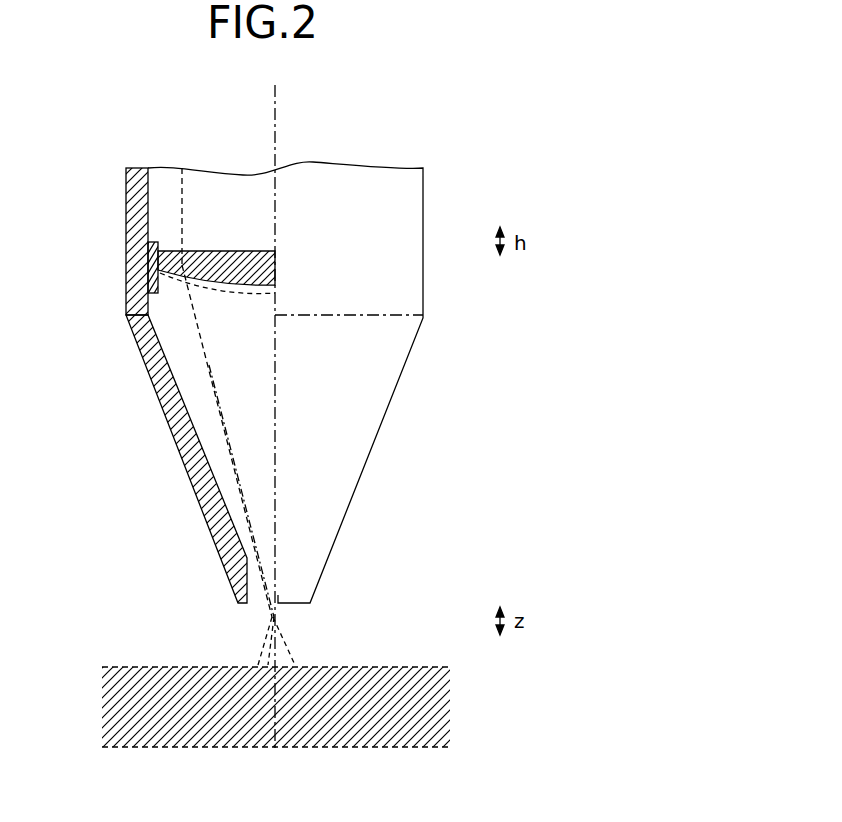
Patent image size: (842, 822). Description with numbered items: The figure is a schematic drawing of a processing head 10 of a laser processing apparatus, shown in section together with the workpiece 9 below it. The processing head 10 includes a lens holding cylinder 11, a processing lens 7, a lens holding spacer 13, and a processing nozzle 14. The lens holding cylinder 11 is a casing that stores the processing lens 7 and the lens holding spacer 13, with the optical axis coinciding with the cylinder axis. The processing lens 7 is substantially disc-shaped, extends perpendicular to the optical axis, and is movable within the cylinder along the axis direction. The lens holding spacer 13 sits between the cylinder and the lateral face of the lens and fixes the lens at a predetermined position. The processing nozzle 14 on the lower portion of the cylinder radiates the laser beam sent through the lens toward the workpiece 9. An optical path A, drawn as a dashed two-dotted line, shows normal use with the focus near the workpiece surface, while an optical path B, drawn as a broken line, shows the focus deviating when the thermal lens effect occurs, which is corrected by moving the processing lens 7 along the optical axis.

The processing head 10 is at (344, 168).
The lens holding cylinder 11 is at (138, 186).
The processing nozzle 14 is at (228, 547).
The lens holding spacer 13 is at (155, 281).
The processing lens 7 is at (205, 250).
The workpiece 9 is at (128, 706).
The optical path A is at (225, 435).
The optical path B is at (250, 463).